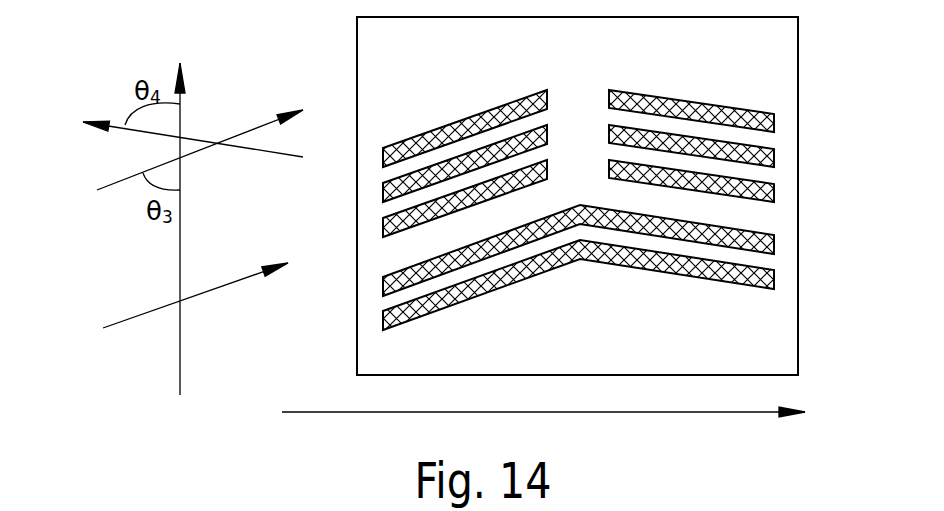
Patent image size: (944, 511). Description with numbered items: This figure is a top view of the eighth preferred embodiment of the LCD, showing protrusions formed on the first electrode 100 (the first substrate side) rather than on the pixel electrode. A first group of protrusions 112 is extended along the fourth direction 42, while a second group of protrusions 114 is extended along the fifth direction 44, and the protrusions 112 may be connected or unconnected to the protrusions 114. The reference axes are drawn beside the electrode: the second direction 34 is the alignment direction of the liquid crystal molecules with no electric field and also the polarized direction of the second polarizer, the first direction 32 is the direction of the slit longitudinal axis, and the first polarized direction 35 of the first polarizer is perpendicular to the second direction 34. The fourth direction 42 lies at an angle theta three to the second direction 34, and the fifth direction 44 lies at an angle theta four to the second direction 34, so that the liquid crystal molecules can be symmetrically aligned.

The first substrate 100 is at (780, 327).
The protrusion 112 is at (385, 188).
The protrusion 114 is at (774, 156).
The first direction 32 is at (214, 287).
The second direction 34 is at (180, 212).
The first polarized direction 35 is at (562, 411).
The fourth direction 42 is at (217, 146).
The fifth direction 44 is at (176, 132).